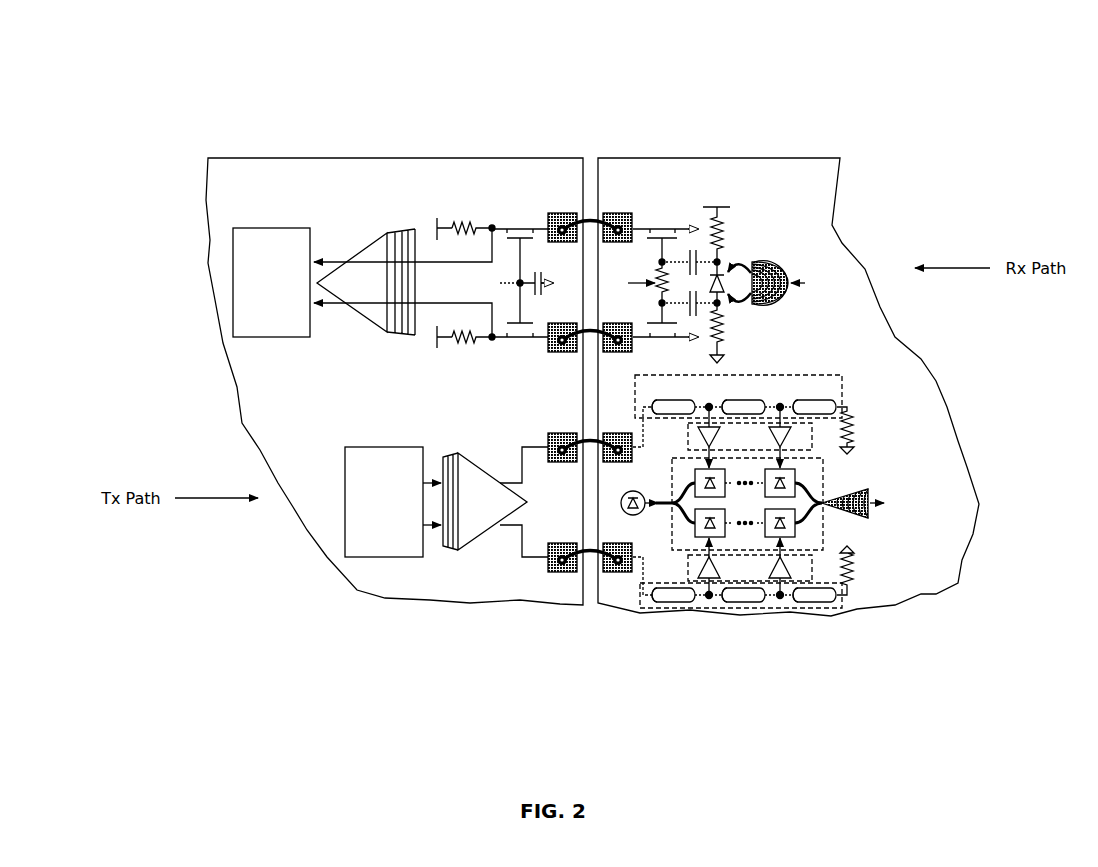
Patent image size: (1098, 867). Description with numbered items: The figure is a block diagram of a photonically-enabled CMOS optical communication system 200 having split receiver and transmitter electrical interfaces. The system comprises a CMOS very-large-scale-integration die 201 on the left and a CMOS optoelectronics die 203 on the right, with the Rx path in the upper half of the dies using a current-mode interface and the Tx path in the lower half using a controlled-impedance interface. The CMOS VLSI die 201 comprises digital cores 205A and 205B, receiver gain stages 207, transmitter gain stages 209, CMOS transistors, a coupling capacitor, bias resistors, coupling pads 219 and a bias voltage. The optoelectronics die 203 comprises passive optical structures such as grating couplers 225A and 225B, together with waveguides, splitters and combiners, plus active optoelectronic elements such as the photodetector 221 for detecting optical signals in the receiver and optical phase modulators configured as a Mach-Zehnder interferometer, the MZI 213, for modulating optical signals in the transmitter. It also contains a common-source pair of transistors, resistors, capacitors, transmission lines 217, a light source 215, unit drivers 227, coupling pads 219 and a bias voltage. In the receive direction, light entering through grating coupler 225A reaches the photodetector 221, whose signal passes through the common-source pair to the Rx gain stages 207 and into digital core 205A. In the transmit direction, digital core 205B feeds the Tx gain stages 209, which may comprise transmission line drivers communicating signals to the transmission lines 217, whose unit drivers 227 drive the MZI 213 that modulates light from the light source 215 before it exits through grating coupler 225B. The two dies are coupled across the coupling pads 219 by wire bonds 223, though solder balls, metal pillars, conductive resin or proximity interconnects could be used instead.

The photonically-enabled CMOS optical communication system 200 is at (196, 96).
The CMOS very-large-scale-integration (VLSI) die 201 is at (394, 381).
The CMOS optoelectronics die 203 is at (759, 413).
The digital core 205A is at (271, 282).
The digital core 205B is at (384, 502).
The receiver (Rx) gain stages 207 is at (365, 282).
The transmitter (Tx) gain stages 209 is at (475, 501).
The MZI 213 is at (734, 504).
The light source 215 is at (620, 503).
The transmission lines 217 is at (720, 648).
The coupling pads 219 is at (604, 209).
The photodetector 221 is at (736, 278).
The wire bonds 223 is at (590, 322).
The grating coupler 225A is at (786, 303).
The grating coupler 225B is at (864, 487).
The unit drivers 227 is at (750, 501).